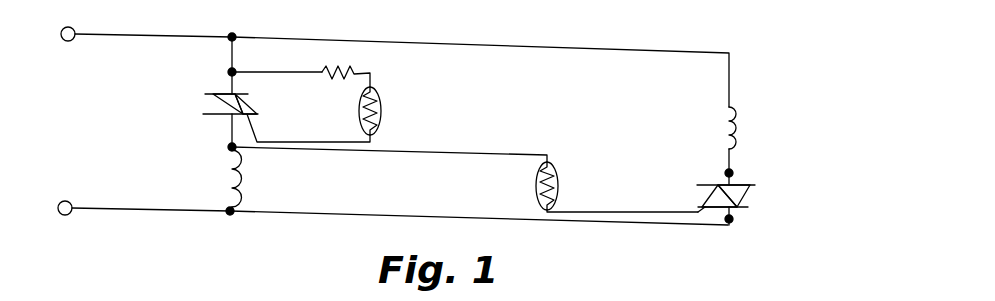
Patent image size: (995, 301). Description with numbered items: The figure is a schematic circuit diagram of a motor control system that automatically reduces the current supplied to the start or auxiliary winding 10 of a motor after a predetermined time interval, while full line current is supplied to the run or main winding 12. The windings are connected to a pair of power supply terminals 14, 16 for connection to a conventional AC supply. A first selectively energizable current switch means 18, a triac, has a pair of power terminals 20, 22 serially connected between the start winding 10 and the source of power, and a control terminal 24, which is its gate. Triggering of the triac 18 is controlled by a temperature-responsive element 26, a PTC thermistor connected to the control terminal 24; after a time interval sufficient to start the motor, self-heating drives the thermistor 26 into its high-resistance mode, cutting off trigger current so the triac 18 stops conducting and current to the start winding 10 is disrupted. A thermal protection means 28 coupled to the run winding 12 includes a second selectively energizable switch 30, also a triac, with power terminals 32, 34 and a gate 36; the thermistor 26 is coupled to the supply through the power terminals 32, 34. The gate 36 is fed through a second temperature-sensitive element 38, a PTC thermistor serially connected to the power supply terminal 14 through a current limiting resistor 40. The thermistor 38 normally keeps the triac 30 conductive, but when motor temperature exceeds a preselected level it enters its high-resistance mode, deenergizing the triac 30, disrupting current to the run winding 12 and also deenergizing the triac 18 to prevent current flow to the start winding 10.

The start winding 10 is at (738, 124).
The run winding 12 is at (241, 180).
The power supply terminal 14 is at (61, 28).
The power supply terminal 16 is at (69, 201).
The first selectively energizable current switch means 18 is at (755, 192).
The power terminal 20 is at (733, 173).
The power terminal 22 is at (733, 220).
The control terminal 24 is at (698, 211).
The temperature-responsive element 26 is at (558, 172).
The thermal protection means 28 is at (340, 121).
The second selectively energizable switch 30 is at (213, 98).
The power terminal 32 is at (232, 72).
The power terminal 34 is at (232, 147).
The gate 36 is at (256, 120).
The second temperature-sensitive element 38 is at (381, 109).
The current limiting resistor 40 is at (352, 76).